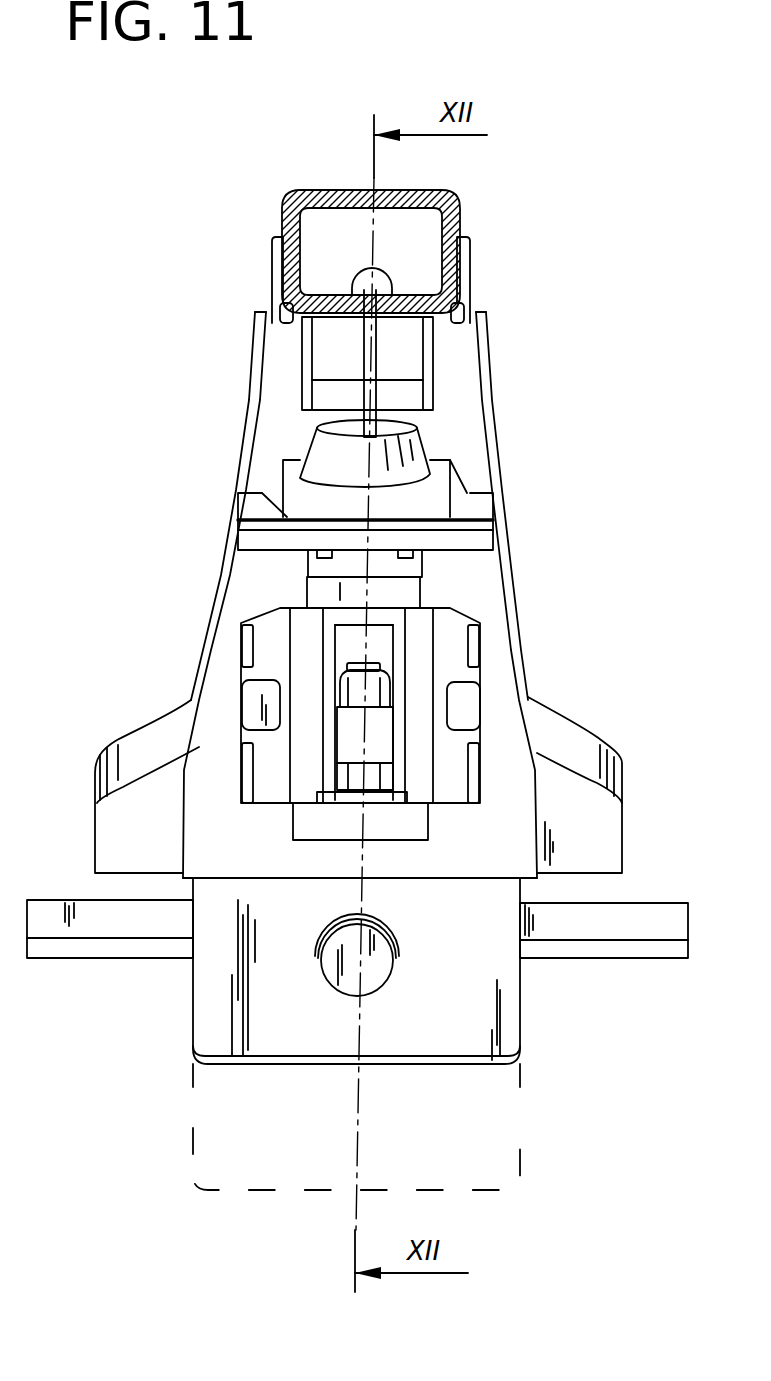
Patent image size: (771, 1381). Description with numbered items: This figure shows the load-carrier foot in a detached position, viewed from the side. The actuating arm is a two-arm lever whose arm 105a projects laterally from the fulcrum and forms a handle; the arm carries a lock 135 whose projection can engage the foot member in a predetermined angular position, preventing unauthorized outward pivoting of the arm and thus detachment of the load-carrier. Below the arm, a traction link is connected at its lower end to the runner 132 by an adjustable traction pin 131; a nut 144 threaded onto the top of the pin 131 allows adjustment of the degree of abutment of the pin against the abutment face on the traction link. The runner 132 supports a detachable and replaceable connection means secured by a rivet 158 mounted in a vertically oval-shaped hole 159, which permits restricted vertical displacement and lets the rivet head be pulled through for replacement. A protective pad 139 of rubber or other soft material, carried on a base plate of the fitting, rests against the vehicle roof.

The lock 135 is at (320, 452).
The arm of the lever 105a is at (335, 508).
The nut 144 is at (383, 690).
The adjustable traction pin 131 is at (372, 778).
The protective pad 139 is at (99, 956).
The runner 132 is at (212, 1004).
The rivet 158 is at (375, 972).
The vertically oval-shaped hole 159 is at (380, 937).